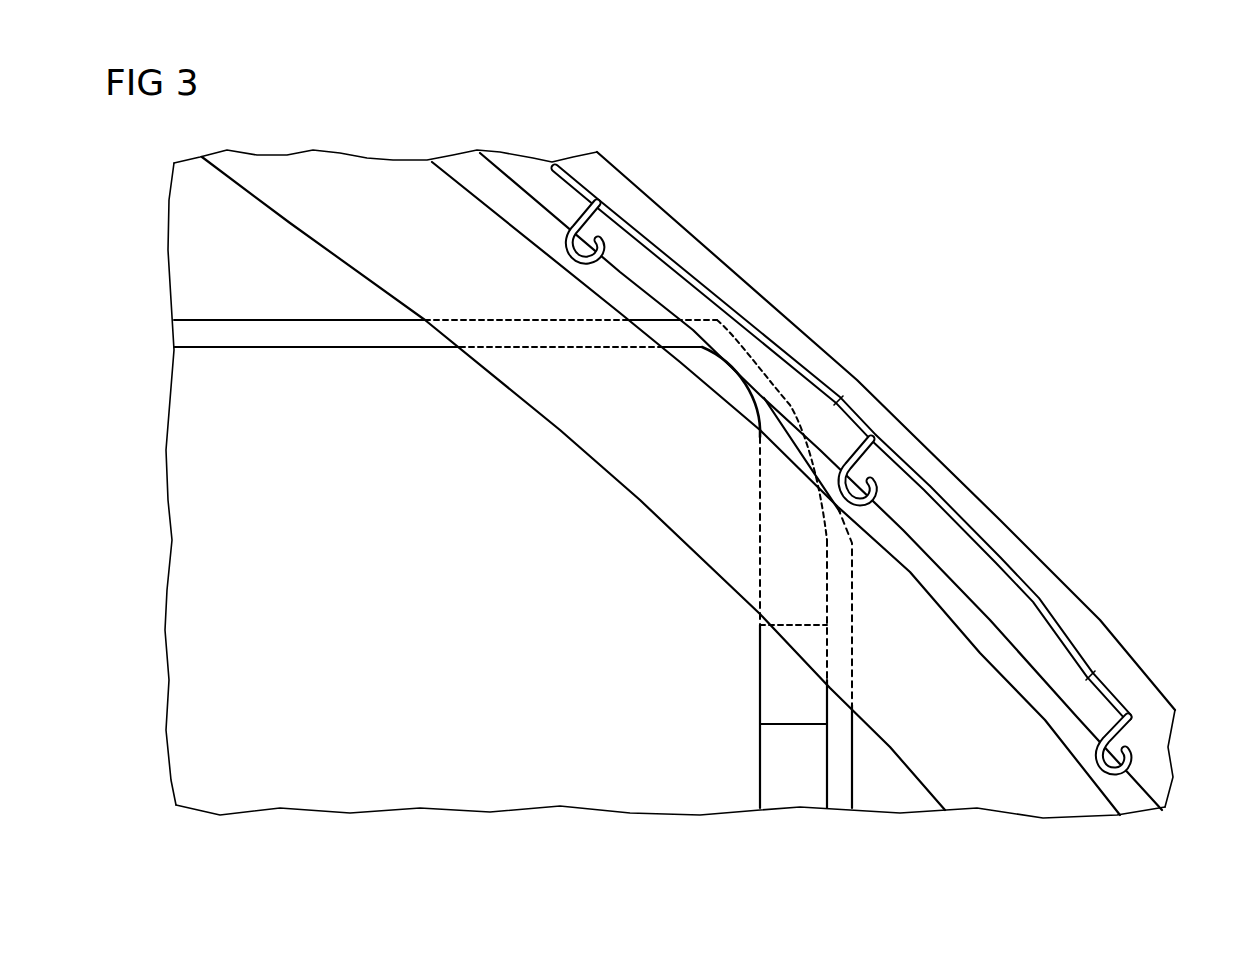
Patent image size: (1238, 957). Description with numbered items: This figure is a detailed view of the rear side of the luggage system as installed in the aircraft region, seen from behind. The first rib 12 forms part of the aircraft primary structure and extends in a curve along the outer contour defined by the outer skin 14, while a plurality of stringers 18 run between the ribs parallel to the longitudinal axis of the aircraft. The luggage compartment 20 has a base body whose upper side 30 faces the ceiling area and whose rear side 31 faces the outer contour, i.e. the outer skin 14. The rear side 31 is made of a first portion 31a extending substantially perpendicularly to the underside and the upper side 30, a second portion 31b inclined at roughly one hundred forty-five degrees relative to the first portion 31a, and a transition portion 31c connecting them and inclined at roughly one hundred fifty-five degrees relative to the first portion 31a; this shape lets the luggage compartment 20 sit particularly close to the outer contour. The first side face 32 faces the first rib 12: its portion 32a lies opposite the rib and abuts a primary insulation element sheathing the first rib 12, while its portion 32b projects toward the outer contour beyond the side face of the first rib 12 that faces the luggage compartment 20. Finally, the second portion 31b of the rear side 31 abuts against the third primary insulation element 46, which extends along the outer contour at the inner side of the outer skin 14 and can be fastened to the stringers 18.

The first rib 12 is at (293, 193).
The outer skin 14 is at (658, 204).
The stringers 18 is at (600, 160).
The luggage compartment 20 is at (170, 500).
The upper side 30 is at (237, 321).
The rear side 31 is at (856, 765).
The first portion 31a is at (853, 651).
The second portion 31b is at (747, 365).
The transition portion 31c is at (825, 452).
The first side face 32 is at (605, 765).
The portion of the first side face 32a is at (605, 425).
The portion of the first side face 32b is at (707, 362).
The third primary insulation element 46 is at (1043, 630).